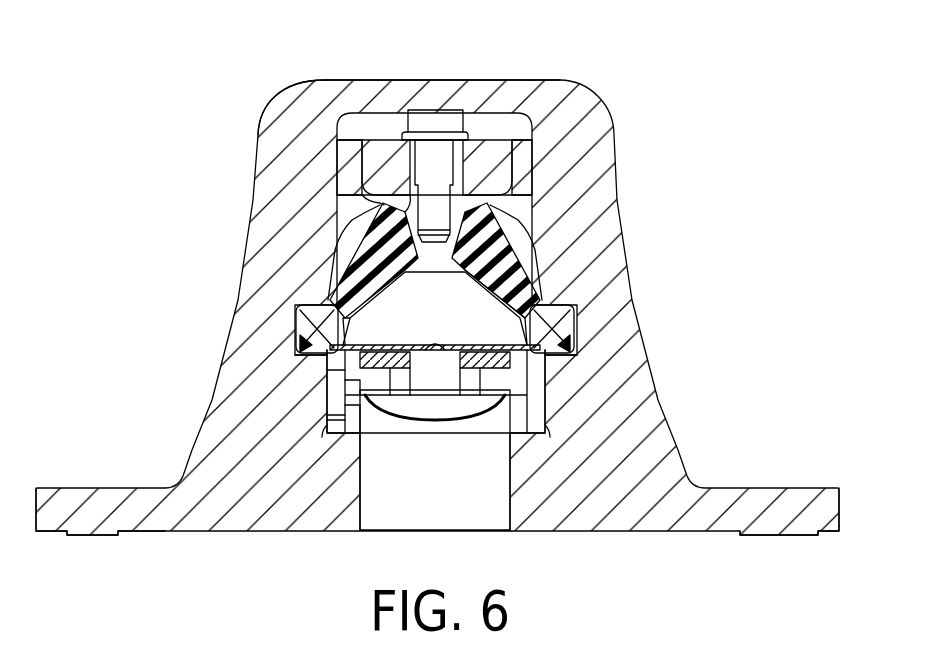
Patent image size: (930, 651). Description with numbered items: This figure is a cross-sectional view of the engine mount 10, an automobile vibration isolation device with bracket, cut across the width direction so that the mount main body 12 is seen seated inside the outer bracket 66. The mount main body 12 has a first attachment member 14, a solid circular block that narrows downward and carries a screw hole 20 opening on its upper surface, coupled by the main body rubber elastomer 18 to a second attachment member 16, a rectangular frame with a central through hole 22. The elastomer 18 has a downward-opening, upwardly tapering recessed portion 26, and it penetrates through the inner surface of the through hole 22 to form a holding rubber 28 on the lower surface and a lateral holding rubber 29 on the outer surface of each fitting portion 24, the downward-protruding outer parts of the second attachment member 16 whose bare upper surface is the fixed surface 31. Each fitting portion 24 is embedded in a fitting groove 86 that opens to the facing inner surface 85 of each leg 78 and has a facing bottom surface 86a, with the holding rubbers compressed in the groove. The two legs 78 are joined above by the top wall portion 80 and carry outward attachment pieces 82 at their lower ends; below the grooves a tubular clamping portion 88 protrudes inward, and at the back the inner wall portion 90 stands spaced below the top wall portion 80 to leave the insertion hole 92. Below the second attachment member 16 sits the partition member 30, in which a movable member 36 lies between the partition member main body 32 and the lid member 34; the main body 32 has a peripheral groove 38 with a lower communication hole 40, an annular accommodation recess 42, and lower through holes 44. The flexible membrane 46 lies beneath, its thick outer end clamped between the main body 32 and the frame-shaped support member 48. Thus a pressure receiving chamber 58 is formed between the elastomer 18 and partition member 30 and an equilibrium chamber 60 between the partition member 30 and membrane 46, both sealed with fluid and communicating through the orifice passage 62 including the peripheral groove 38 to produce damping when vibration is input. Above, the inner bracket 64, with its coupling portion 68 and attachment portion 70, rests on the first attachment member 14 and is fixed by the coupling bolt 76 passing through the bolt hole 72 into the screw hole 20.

The engine mount 10 is at (612, 77).
The mount main body 12 is at (540, 206).
The first attachment member 14 is at (545, 170).
The second attachment member 16 is at (565, 347).
The main body rubber elastomer 18 is at (510, 248).
The screw hole 20 is at (447, 130).
The through hole 22 is at (495, 312).
The fitting portion 24 is at (330, 382).
The recessed portion 26 is at (488, 302).
The holding rubber 28 is at (336, 410).
The lateral holding rubber 29 is at (297, 347).
The partition member 30 is at (435, 402).
The fixed surface 31 is at (325, 302).
The partition member main body 32 is at (495, 397).
The lid member 34 is at (365, 350).
The movable member 36 is at (417, 352).
The peripheral groove 38 is at (512, 355).
The lower communication hole 40 is at (355, 395).
The accommodation recess 42 is at (420, 397).
The lower through hole 44 is at (395, 405).
The flexible membrane 46 is at (470, 400).
The support member 48 is at (550, 412).
The pressure receiving chamber 58 is at (482, 306).
The equilibrium chamber 60 is at (500, 392).
The orifice passage 62 is at (345, 422).
The inner bracket 64 is at (500, 145).
The outer bracket 66 is at (272, 108).
The coupling portion 68 is at (392, 154).
The attachment portion 70 is at (352, 172).
The bolt hole 72 is at (430, 148).
The coupling bolt 76 is at (456, 122).
The leg 78 is at (285, 242).
The top wall portion 80 is at (385, 92).
The attachment piece 82 is at (92, 512).
The facing inner surface 85 is at (325, 425).
The fitting groove 86 is at (296, 322).
The facing bottom surface 86a is at (300, 337).
The clamping portion 88 is at (345, 497).
The inner wall portion 90 is at (332, 267).
The insertion hole 92 is at (345, 217).